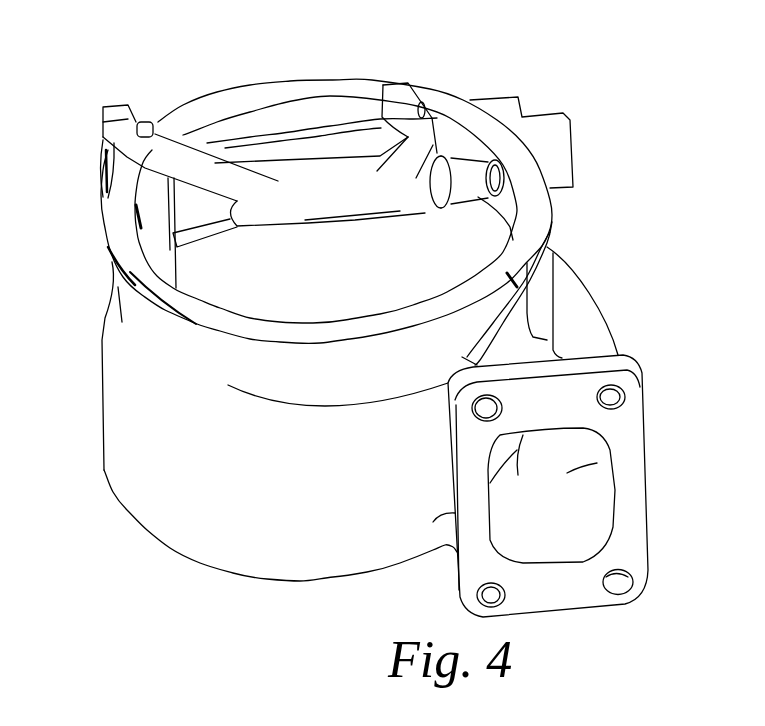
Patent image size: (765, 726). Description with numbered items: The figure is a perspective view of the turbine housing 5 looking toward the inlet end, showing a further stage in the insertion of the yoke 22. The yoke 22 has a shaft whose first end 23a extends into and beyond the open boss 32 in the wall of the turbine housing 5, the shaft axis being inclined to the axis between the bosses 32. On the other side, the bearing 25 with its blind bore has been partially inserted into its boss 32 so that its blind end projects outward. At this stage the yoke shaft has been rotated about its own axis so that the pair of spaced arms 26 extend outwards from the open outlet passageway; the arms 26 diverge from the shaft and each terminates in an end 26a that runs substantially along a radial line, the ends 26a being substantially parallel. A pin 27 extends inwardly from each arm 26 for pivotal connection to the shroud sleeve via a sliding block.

The turbine housing 5 is at (128, 403).
The yoke 22 is at (286, 207).
The first end of the shaft 23a is at (512, 218).
The bearing 25 is at (557, 142).
The arms 26 is at (160, 167).
The end of the arm 26a is at (112, 107).
The pin 27 is at (147, 121).
The boss 32 is at (100, 153).